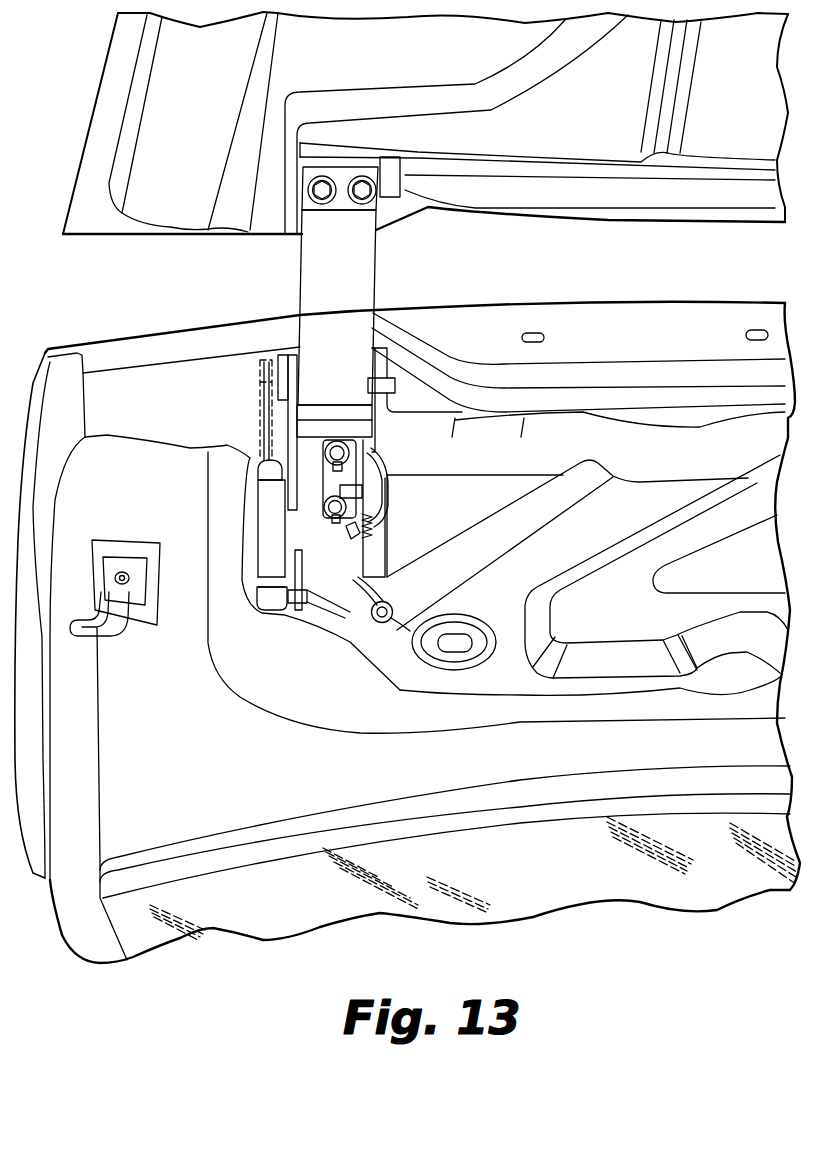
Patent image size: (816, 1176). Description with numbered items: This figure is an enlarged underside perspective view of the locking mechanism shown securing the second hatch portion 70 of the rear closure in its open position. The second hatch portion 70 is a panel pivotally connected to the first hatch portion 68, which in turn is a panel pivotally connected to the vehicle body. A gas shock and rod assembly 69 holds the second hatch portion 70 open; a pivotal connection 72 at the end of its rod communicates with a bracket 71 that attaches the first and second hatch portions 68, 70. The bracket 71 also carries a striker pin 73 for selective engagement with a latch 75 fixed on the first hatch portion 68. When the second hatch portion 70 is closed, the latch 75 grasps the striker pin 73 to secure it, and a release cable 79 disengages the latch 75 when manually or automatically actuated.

The first hatch portion 68 is at (208, 777).
The gas shock and rod assembly 69 is at (272, 527).
The second hatch portion 70 is at (201, 131).
The bracket 71 is at (350, 311).
The pivotal connection 72 is at (240, 368).
The striker pin 73 is at (382, 388).
The latch 75 is at (400, 490).
The release cable 79 is at (360, 632).